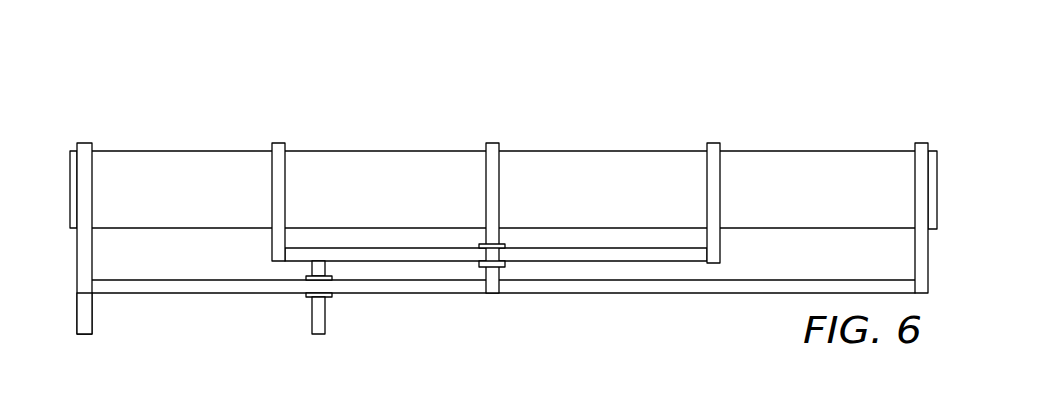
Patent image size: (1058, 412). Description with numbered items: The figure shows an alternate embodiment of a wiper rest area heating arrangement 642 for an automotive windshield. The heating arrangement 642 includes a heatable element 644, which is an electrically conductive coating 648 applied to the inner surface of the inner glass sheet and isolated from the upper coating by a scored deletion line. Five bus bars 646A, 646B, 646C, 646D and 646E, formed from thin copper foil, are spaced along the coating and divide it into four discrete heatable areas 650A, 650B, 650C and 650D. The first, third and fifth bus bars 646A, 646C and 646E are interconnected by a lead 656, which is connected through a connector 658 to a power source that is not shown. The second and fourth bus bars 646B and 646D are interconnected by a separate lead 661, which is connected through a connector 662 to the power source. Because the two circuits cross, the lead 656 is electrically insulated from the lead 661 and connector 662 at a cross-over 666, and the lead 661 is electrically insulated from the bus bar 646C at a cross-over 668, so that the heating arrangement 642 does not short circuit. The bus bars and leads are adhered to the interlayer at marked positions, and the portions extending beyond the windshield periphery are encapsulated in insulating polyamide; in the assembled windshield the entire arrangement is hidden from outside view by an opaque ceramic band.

The heating arrangement 642 is at (168, 120).
The heatable element 644 is at (400, 150).
The bus bar 646A is at (85, 142).
The bus bar 646B is at (279, 142).
The bus bar 646C is at (493, 142).
The bus bar 646D is at (713, 142).
The bus bar 646E is at (920, 142).
The electrically conductive coating 648 is at (661, 168).
The heatable area 650A is at (203, 206).
The heatable area 650B is at (407, 206).
The heatable area 650C is at (625, 206).
The heatable area 650D is at (840, 206).
The lead 656 is at (636, 294).
The connector 658 is at (92, 318).
The lead 661 is at (432, 262).
The connector 662 is at (326, 325).
The cross-over 666 is at (306, 296).
The cross-over 668 is at (505, 266).